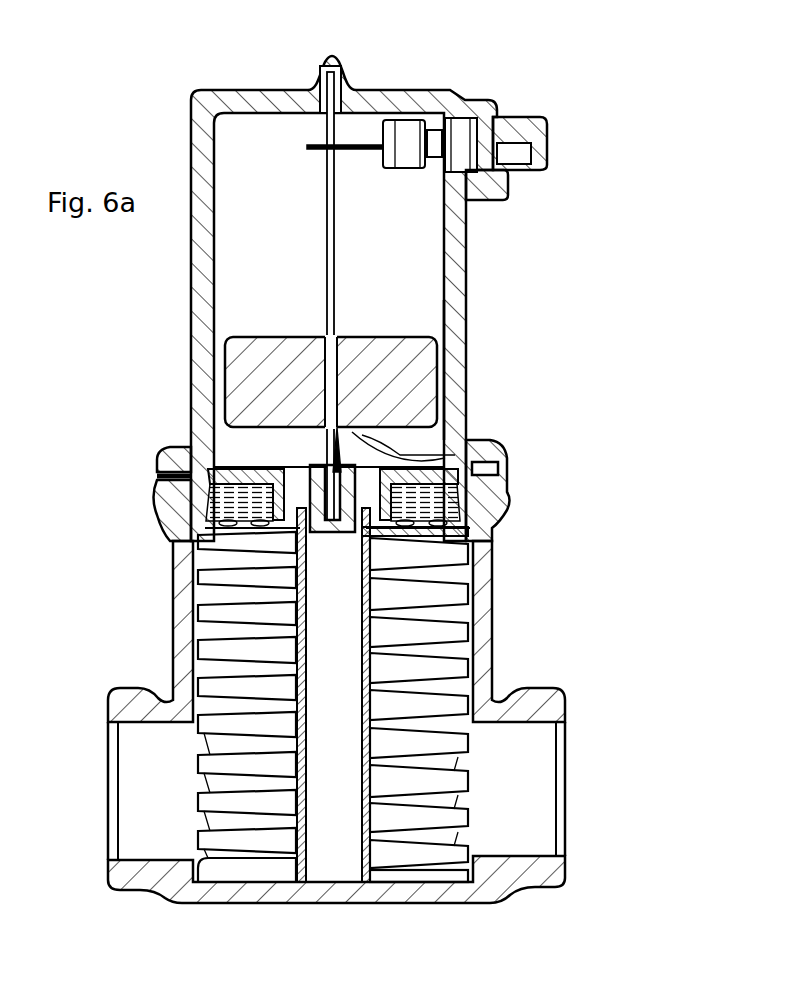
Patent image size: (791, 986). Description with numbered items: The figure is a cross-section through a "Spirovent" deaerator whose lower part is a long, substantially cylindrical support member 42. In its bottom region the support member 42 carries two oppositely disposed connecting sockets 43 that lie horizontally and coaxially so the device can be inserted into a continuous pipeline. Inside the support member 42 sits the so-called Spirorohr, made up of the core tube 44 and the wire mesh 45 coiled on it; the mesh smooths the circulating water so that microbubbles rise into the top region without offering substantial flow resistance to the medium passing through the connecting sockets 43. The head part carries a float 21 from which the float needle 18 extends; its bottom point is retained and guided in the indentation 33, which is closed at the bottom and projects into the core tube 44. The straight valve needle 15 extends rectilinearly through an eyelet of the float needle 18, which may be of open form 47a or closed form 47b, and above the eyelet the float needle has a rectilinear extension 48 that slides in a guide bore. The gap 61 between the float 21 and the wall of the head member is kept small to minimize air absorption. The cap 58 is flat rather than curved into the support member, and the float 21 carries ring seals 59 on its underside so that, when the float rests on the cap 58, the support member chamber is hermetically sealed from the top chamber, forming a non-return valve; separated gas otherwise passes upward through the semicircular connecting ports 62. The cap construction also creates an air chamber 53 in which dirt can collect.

The valve needle 15 is at (420, 85).
The rectilinear extension 48 is at (363, 88).
The float needle 18 is at (334, 222).
The open eyelet 47a is at (334, 165).
The closed eyelet 47b is at (465, 158).
The float 21 is at (377, 348).
The gap 61 is at (444, 388).
The ring seals 59 is at (445, 458).
The indentation 33 is at (333, 495).
The connecting ports 62 is at (293, 485).
The cap 58 is at (214, 468).
The air chamber 53 is at (480, 518).
The support member 42 is at (492, 620).
The connecting sockets 43 is at (132, 690).
The core tube 44 is at (410, 762).
The wire mesh 45 is at (400, 812).